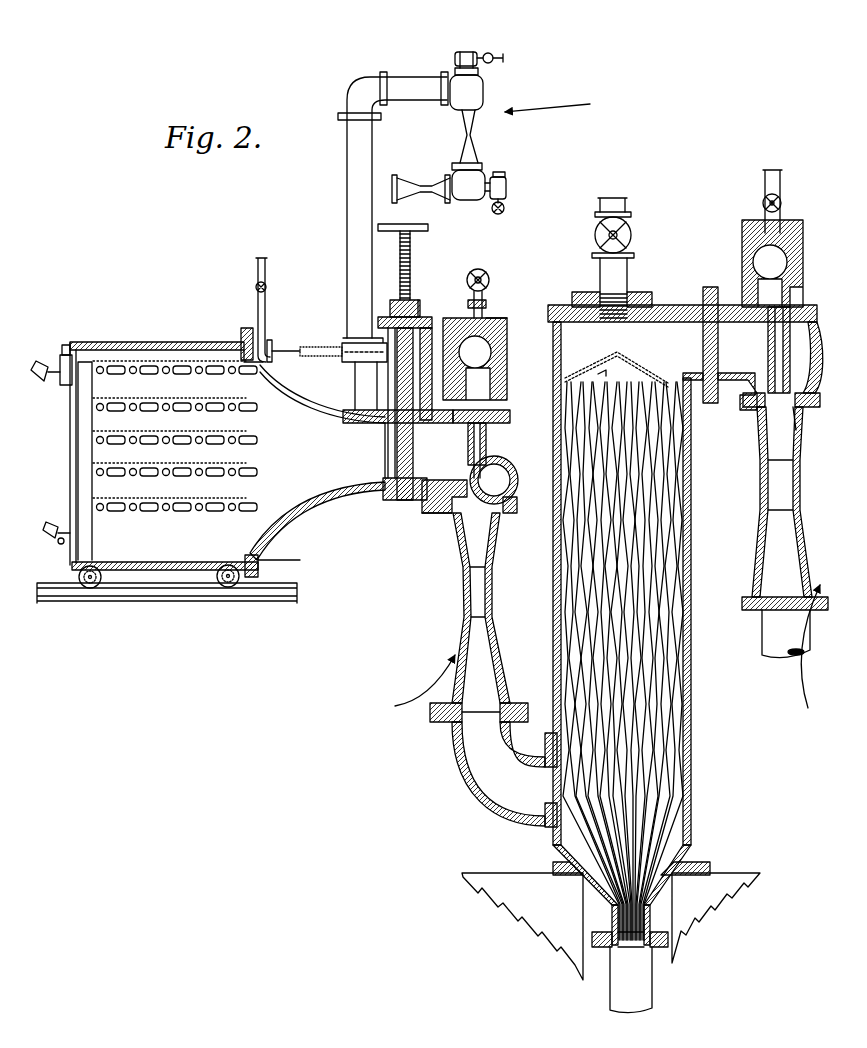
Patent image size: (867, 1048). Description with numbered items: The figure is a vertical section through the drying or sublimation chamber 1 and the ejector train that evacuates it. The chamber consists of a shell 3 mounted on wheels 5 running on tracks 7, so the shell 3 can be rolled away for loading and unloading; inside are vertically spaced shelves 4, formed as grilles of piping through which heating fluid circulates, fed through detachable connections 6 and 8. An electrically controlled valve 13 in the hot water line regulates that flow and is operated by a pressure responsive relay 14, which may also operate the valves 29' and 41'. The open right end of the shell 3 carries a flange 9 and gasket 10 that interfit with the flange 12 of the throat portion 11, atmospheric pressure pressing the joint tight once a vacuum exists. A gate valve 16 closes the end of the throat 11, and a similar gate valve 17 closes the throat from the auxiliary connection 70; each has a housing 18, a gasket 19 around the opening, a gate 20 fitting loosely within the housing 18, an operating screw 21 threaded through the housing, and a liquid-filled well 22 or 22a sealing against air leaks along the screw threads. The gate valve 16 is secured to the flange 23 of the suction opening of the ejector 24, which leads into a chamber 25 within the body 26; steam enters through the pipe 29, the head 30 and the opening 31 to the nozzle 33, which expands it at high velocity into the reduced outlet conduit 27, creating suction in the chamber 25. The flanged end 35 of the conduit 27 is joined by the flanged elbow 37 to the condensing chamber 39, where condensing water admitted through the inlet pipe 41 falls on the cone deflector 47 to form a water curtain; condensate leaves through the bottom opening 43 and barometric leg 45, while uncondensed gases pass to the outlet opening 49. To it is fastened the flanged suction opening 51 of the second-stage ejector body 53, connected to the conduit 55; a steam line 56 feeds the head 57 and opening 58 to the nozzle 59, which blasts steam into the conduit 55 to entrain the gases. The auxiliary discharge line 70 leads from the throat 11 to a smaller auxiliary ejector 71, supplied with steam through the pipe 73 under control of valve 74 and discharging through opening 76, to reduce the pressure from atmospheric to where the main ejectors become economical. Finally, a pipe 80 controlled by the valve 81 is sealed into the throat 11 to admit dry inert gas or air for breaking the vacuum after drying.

The drying or sublimation chamber 1 is at (130, 338).
The shell 3 is at (175, 341).
The shelves 4 is at (135, 475).
The wheels 5 is at (90, 580).
The detachable connection 6 is at (47, 383).
The tracks 7 is at (140, 600).
The detachable connection 8 is at (55, 530).
The flange 9 is at (243, 336).
The gasket 10 is at (262, 558).
The throat portion 11 is at (290, 349).
The flange 12 is at (250, 332).
The electrically controlled valve 13 is at (62, 345).
The pressure responsive relay 14 is at (82, 348).
The gate valve 16 is at (420, 290).
The gate valve 17 is at (337, 336).
The housing 18 is at (355, 385).
The gasket 19 is at (400, 490).
The gate 20 is at (390, 395).
The operating screw 21 is at (410, 250).
The well 22 is at (420, 300).
The well 22a is at (295, 392).
The flange of suction opening 23 is at (425, 508).
The ejector 24 is at (432, 535).
The chamber 25 is at (500, 478).
The body 26 is at (505, 468).
The outlet conduit 27 is at (478, 572).
The pipe 29 is at (479, 346).
The valve 29' is at (507, 307).
The head 30 is at (466, 296).
The opening 31 is at (470, 440).
The nozzle 33 is at (505, 500).
The flanged end 35 is at (545, 825).
The flanged elbow 37 is at (470, 790).
The condensing chamber 39 is at (694, 695).
The inlet pipe 41 is at (622, 276).
The valve 41' is at (639, 225).
The bottom opening 43 is at (640, 940).
The barometric leg 45 is at (622, 985).
The cone deflector 47 is at (600, 364).
The outlet opening 49 is at (688, 330).
The flanged suction opening 51 is at (735, 405).
The second-stage ejector body 53 is at (822, 357).
The conduit 55 is at (760, 488).
The steam line 56 is at (780, 182).
The head 57 is at (795, 236).
The opening 58 is at (791, 322).
The nozzle 59 is at (797, 400).
The auxiliary discharge line 70 is at (347, 165).
The auxiliary ejector 71 is at (490, 88).
The pipe 73 is at (505, 58).
The valve 74 is at (490, 52).
The discharge opening 76 is at (478, 153).
The pipe 80 is at (262, 262).
The valve 81 is at (256, 287).